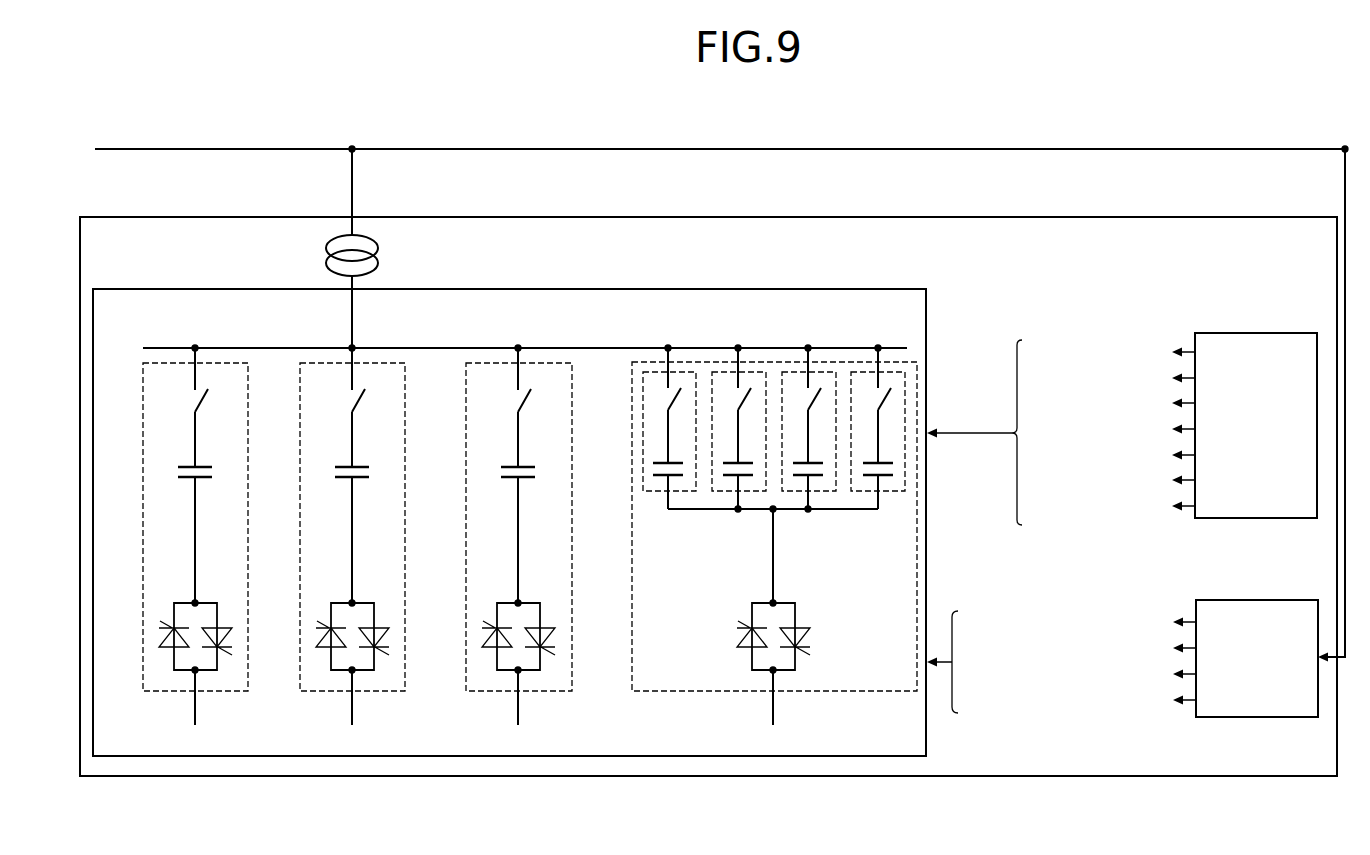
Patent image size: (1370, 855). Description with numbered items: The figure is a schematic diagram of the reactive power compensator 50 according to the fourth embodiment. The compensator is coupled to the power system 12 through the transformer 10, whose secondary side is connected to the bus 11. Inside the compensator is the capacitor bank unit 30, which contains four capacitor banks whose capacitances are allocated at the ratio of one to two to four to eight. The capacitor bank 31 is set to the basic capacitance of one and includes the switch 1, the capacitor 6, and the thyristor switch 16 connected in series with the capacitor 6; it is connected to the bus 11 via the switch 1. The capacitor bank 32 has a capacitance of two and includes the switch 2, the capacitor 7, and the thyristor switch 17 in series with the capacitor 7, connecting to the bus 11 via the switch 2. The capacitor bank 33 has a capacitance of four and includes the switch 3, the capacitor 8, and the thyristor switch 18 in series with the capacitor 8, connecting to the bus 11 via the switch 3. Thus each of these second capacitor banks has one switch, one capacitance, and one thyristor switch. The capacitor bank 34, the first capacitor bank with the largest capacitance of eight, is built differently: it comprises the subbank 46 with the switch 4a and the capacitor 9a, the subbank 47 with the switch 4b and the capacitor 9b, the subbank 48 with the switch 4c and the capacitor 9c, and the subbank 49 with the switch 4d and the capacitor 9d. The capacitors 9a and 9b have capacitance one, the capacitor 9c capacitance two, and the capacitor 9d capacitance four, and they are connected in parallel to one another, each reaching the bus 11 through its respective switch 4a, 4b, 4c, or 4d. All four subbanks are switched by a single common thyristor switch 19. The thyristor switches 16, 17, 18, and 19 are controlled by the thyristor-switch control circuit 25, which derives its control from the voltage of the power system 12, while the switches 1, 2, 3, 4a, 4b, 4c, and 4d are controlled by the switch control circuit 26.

The switch 1 is at (192, 400).
The switch 2 is at (349, 400).
The switch 3 is at (515, 400).
The switch 4a is at (667, 406).
The switch 4b is at (737, 406).
The switch 4c is at (807, 406).
The switch 4d is at (877, 406).
The capacitor 6 is at (176, 472).
The capacitor 7 is at (334, 472).
The capacitor 8 is at (499, 472).
The capacitor 9a is at (657, 466).
The capacitor 9b is at (727, 466).
The capacitor 9c is at (797, 466).
The capacitor 9d is at (867, 466).
The transformer 10 is at (378, 255).
The bus 11 is at (271, 337).
The power system 12 is at (392, 148).
The thyristor switch 16 is at (171, 622).
The thyristor switch 17 is at (329, 622).
The thyristor switch 18 is at (493, 622).
The thyristor switch 19 is at (752, 616).
The thyristor-switch control circuit 25 is at (1263, 590).
The switch control circuit 26 is at (1263, 323).
The capacitor bank unit 30 is at (566, 277).
The capacitor bank 31 is at (247, 693).
The capacitor bank 32 is at (404, 693).
The capacitor bank 33 is at (570, 693).
The capacitor bank 34 is at (838, 692).
The subbank 46 is at (658, 493).
The subbank 47 is at (726, 493).
The subbank 48 is at (831, 493).
The subbank 49 is at (896, 493).
The reactive power compensator 50 is at (634, 206).